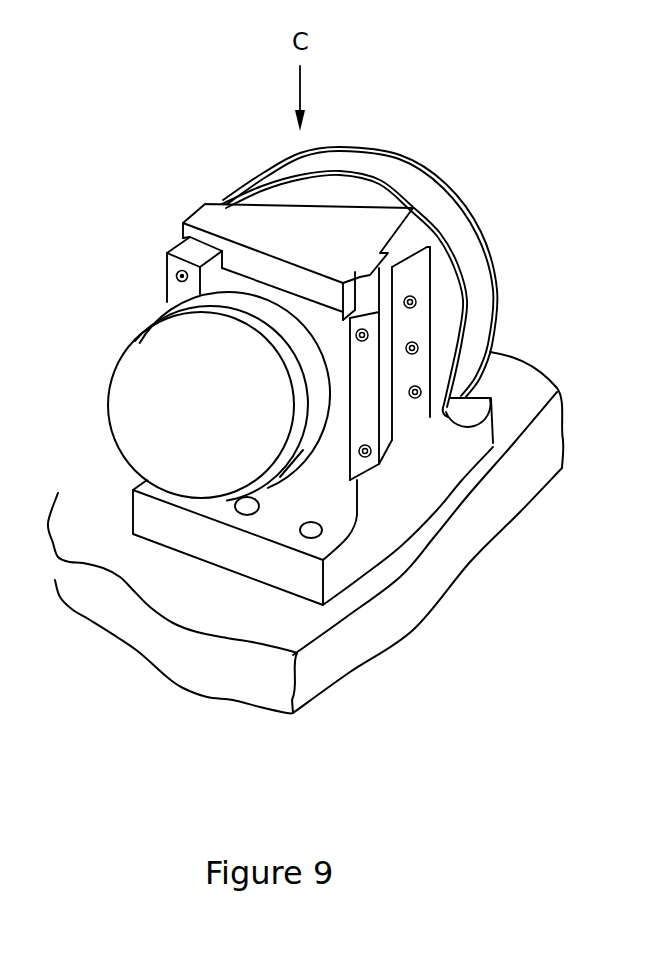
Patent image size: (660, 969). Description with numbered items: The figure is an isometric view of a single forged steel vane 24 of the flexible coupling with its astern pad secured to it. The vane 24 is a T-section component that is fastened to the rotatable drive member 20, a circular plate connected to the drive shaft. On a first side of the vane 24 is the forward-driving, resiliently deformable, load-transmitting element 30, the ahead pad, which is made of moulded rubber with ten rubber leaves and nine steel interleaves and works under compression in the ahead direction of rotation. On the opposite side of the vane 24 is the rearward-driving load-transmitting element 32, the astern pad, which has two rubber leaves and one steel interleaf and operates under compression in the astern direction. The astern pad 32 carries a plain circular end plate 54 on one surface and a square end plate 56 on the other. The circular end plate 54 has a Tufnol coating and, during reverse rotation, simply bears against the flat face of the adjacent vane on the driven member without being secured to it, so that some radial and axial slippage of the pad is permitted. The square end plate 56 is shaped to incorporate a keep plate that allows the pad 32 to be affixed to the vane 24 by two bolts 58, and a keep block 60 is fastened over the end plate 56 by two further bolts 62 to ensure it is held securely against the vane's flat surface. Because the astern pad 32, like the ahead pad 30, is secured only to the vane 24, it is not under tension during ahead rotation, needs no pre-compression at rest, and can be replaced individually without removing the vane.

The drive member 20 is at (455, 560).
The vane 24 is at (318, 226).
The forward-driving load-transmitting element 30 is at (473, 298).
The rearward-driving load-transmitting element 32 is at (303, 448).
The circular end plate 54 is at (280, 473).
The square end plate 56 is at (365, 392).
The bolts 58 is at (377, 449).
The keep block 60 is at (171, 291).
The bolts 62 is at (175, 276).